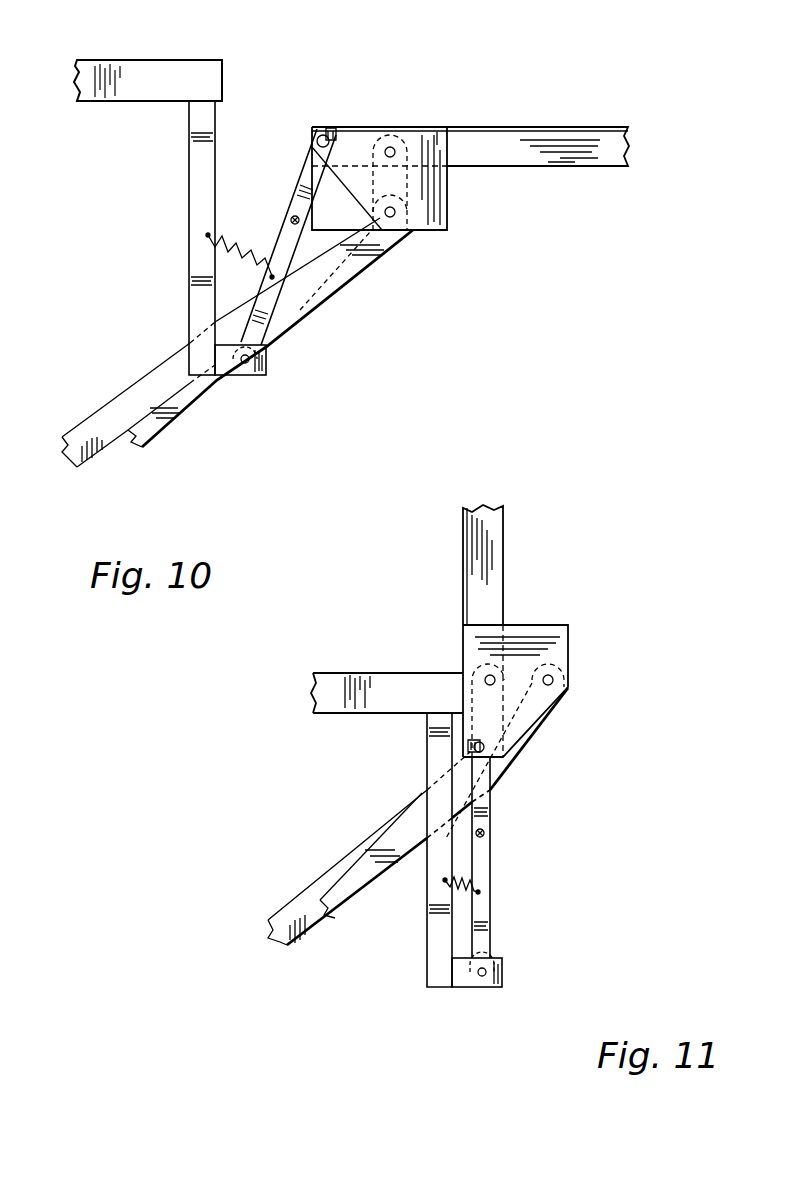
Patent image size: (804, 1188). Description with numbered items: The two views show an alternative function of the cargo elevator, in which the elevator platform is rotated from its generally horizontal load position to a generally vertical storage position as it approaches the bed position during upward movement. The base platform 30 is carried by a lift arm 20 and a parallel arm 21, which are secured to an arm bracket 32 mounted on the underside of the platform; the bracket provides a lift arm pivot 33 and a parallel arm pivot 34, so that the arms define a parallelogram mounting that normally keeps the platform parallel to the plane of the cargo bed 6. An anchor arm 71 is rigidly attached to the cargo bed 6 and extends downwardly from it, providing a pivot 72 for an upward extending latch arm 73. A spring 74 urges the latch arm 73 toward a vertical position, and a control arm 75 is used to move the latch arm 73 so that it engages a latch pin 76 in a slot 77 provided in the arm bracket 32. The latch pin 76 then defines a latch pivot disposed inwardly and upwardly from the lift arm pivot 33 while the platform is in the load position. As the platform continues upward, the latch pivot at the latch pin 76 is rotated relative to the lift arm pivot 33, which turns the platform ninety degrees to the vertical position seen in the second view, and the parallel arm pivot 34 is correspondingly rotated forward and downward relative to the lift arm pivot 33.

In FIG. 10, the cargo bed 6 is at (141, 60).
In FIG. 11, the cargo bed 6 is at (368, 675).
In FIG. 10, the lift arm 20 is at (158, 424).
In FIG. 11, the lift arm 20 is at (356, 902).
In FIG. 10, the parallel arm 21 is at (108, 413).
In FIG. 11, the parallel arm 21 is at (303, 893).
In FIG. 10, the base platform 30 is at (536, 124).
In FIG. 11, the base platform 30 is at (460, 548).
In FIG. 10, the arm bracket 32 is at (433, 205).
In FIG. 11, the arm bracket 32 is at (545, 628).
In FIG. 10, the lift arm pivot 33 is at (394, 218).
In FIG. 11, the lift arm pivot 33 is at (555, 682).
In FIG. 10, the parallel arm pivot 34 is at (390, 147).
In FIG. 11, the parallel arm pivot 34 is at (487, 676).
In FIG. 10, the anchor arm 71 is at (189, 152).
In FIG. 11, the anchor arm 71 is at (434, 960).
In FIG. 10, the pivot 72 is at (247, 365).
In FIG. 11, the pivot 72 is at (484, 978).
In FIG. 10, the latch arm 73 is at (308, 173).
In FIG. 11, the latch arm 73 is at (484, 868).
In FIG. 10, the spring 74 is at (252, 266).
In FIG. 11, the spring 74 is at (468, 892).
In FIG. 10, the control arm 75 is at (298, 220).
In FIG. 11, the control arm 75 is at (486, 833).
In FIG. 10, the latch pin 76 is at (320, 137).
In FIG. 11, the latch pin 76 is at (486, 746).
In FIG. 10, the slot 77 is at (332, 130).
In FIG. 11, the slot 77 is at (468, 750).